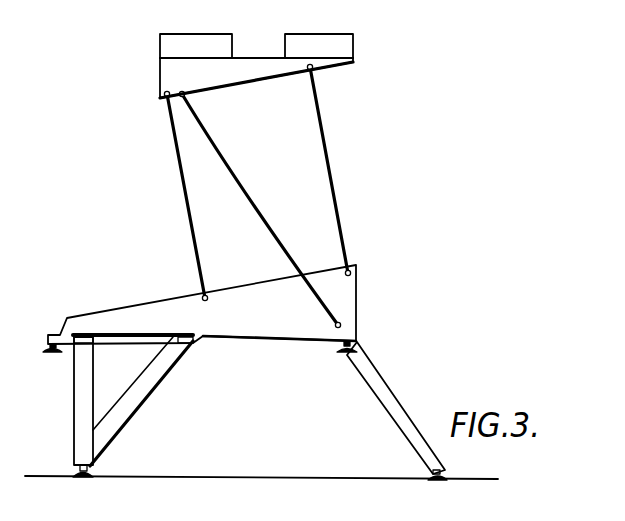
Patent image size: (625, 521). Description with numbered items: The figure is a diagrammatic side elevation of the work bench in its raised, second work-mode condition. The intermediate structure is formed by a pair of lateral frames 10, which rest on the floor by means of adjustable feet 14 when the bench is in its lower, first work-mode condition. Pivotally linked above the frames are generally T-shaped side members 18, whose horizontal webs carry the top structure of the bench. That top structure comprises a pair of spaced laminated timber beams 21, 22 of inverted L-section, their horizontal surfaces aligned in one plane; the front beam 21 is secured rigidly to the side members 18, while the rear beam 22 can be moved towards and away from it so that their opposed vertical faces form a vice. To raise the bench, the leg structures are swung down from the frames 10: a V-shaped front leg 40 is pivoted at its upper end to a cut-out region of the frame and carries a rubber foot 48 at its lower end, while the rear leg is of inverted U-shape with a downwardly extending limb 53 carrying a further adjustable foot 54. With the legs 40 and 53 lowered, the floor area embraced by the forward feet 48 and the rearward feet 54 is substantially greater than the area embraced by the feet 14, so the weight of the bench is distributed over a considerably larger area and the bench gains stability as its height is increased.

The lateral frame 10 is at (242, 327).
The adjustable foot 14 is at (58, 352).
The T-shaped side member 18 is at (250, 73).
The laminated timber beam 21 is at (205, 42).
The laminated timber beam 22 is at (332, 45).
The front leg 40 is at (147, 387).
The rubber foot 48 is at (79, 478).
The downwardly extending limb 53 is at (387, 402).
The adjustable foot 54 is at (440, 481).